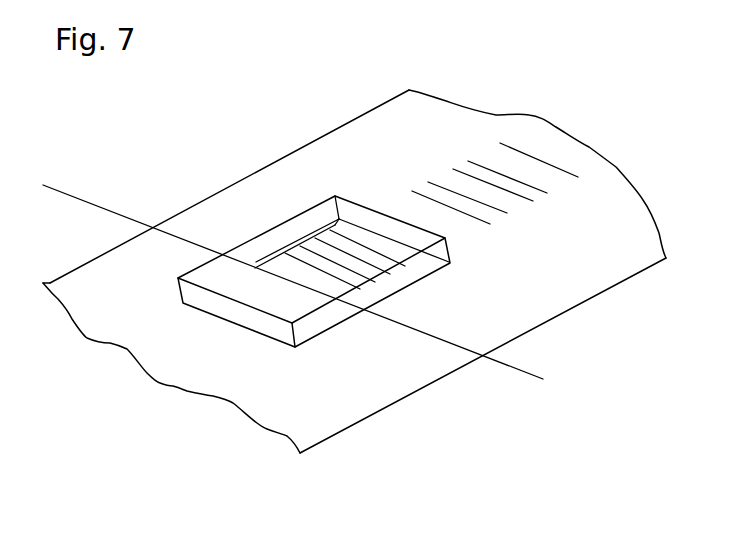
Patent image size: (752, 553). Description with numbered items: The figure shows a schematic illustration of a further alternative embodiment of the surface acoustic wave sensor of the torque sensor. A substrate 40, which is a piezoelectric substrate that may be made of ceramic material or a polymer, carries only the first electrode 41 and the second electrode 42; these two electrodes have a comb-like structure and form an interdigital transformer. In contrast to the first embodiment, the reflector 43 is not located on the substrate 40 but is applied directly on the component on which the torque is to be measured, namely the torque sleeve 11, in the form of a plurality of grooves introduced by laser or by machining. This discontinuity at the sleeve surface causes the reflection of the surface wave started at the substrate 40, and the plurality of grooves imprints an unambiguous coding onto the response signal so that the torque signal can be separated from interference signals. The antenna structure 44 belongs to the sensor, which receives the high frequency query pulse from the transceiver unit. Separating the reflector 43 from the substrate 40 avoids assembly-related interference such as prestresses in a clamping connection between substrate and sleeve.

The torque sleeve 11 is at (375, 108).
The substrate 40 is at (276, 302).
The first electrode 41 is at (290, 252).
The second electrode 42 is at (378, 258).
The reflector 43 is at (528, 152).
The antenna structure 44 is at (70, 196).